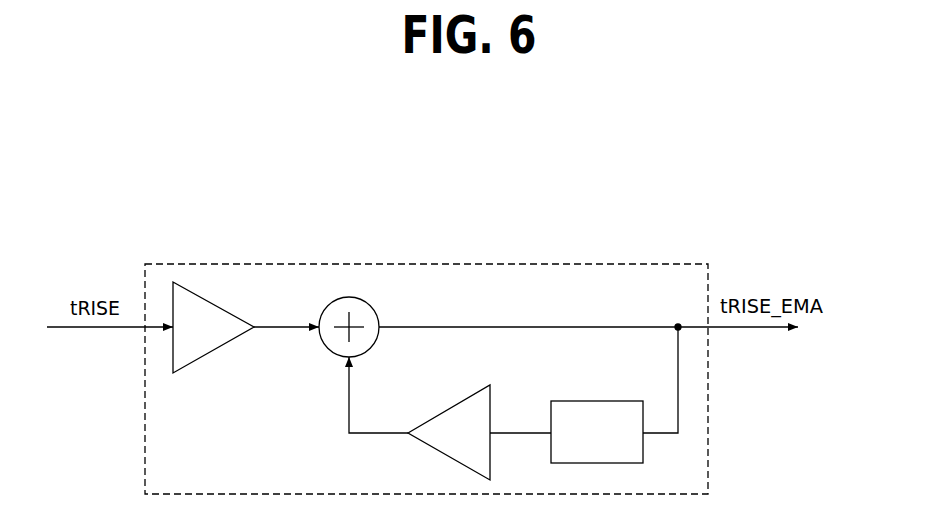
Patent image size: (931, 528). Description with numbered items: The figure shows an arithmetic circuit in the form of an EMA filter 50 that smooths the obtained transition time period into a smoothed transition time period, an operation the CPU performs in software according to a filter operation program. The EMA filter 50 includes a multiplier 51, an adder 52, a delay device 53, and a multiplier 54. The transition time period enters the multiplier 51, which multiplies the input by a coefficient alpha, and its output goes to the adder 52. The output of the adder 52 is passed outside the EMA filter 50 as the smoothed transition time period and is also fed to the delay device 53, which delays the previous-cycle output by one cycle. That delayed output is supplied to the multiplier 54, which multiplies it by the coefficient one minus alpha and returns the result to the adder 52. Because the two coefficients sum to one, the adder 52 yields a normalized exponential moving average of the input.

The EMA filter 50 is at (426, 263).
The multiplier 51 is at (212, 300).
The adder 52 is at (367, 300).
The delay device 53 is at (596, 401).
The multiplier 54 is at (449, 408).